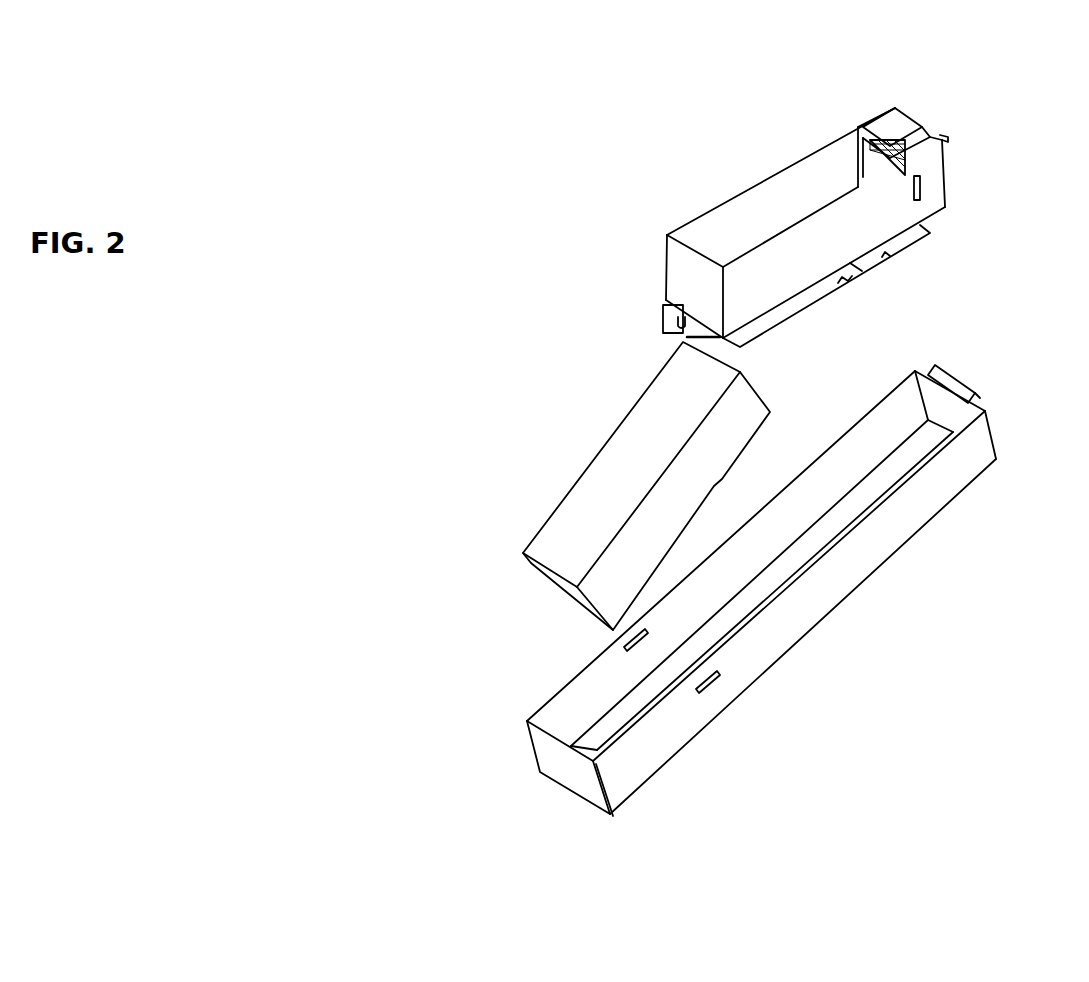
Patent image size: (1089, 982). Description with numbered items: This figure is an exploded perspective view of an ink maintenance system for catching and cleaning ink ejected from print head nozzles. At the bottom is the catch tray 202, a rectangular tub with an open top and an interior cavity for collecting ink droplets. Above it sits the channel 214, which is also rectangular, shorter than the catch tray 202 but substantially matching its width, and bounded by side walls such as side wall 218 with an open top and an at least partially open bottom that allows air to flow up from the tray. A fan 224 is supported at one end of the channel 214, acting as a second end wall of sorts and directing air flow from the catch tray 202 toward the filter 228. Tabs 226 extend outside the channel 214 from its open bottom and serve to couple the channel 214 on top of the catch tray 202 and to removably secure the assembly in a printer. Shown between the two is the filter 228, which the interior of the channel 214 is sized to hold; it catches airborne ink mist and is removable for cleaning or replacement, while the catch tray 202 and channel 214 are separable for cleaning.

The catch tray 202 is at (517, 674).
The channel 214 is at (657, 214).
The side wall 218 is at (767, 188).
The fan 224 is at (915, 120).
The tabs 226 is at (850, 305).
The filter 228 is at (623, 448).